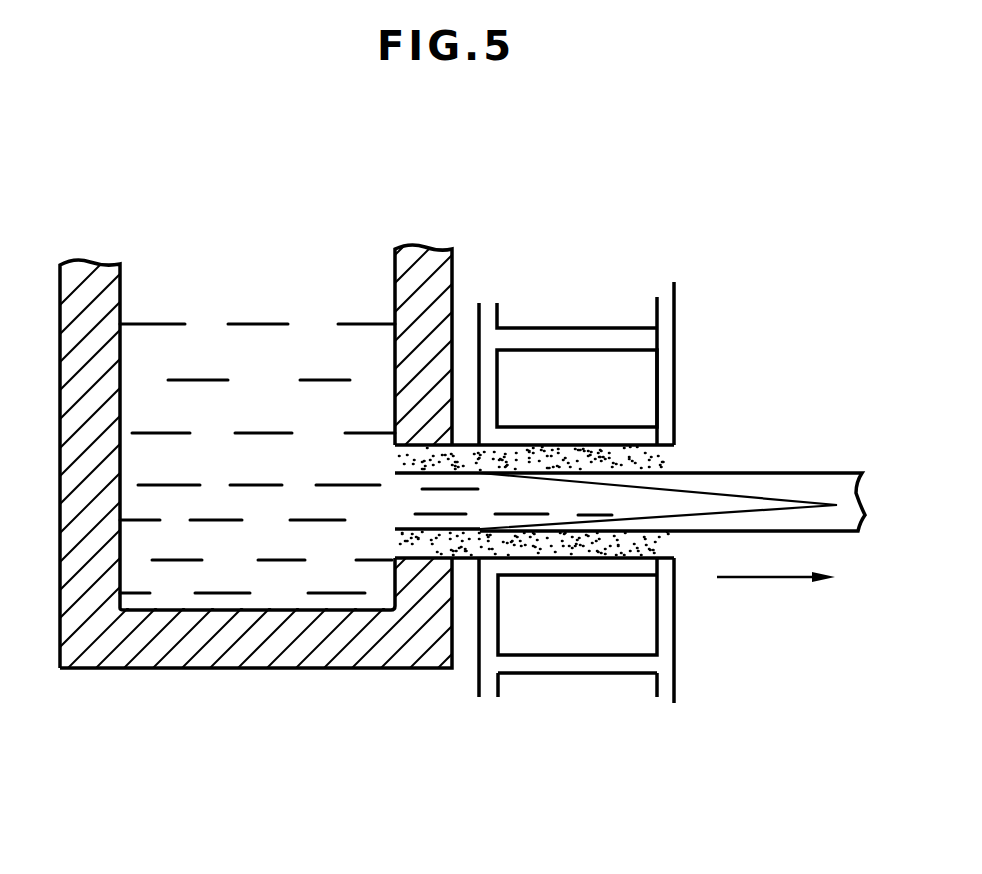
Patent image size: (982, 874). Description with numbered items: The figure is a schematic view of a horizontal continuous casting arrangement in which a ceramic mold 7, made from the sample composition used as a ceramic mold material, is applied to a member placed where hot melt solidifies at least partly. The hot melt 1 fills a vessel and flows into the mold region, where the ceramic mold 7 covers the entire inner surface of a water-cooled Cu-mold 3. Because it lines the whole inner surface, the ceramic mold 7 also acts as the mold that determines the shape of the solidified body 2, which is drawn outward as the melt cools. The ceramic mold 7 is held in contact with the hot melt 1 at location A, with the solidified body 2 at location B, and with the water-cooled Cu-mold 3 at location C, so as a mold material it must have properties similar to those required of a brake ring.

The hot melt 1 is at (158, 345).
The solidified body 2 is at (693, 485).
The water-cooled Cu-mold 3 is at (613, 343).
The ceramic mold 7 is at (474, 545).
The location A is at (410, 466).
The location B is at (507, 470).
The location C is at (553, 445).